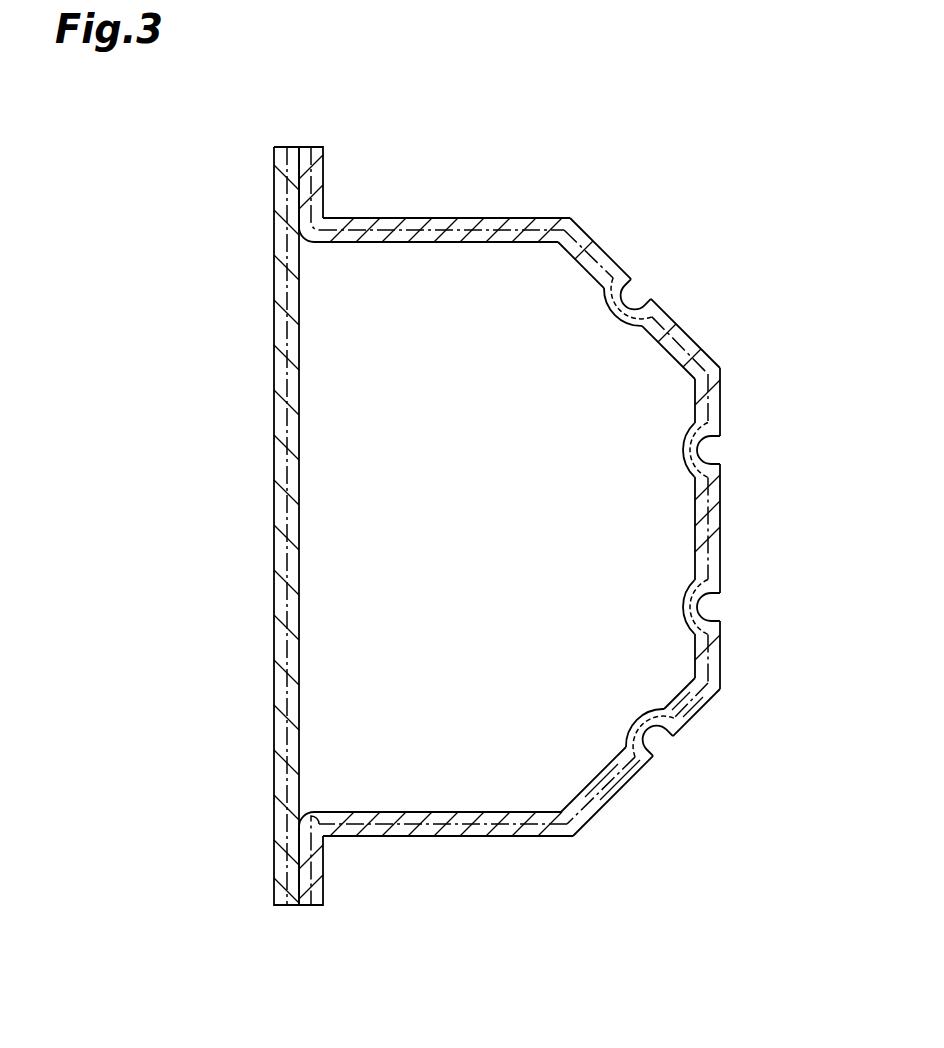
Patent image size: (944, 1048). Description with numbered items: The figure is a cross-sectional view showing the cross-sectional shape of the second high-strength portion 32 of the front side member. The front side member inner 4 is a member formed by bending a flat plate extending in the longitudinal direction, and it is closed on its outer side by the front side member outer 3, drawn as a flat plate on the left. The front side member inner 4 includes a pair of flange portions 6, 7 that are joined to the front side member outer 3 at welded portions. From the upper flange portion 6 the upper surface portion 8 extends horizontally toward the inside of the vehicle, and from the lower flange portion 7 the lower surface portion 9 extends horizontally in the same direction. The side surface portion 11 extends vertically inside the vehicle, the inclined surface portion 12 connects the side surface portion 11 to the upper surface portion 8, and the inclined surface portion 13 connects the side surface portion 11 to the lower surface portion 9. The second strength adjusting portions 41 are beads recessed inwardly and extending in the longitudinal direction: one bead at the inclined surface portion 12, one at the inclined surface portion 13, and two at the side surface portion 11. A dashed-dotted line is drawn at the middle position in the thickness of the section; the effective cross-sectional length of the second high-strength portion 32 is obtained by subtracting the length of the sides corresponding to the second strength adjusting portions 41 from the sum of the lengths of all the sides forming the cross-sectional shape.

The front side member outer 3 is at (270, 446).
The front side member inner 4 is at (786, 318).
The flange portion 6 is at (311, 186).
The flange portion 7 is at (317, 870).
The upper surface portion 8 is at (421, 222).
The lower surface portion 9 is at (421, 838).
The side surface portion 11 is at (707, 397).
The inclined surface portion 12 is at (602, 258).
The inclined surface portion 13 is at (688, 712).
The second high-strength portion 32 is at (364, 143).
The second strength adjusting portions 41 is at (636, 303).